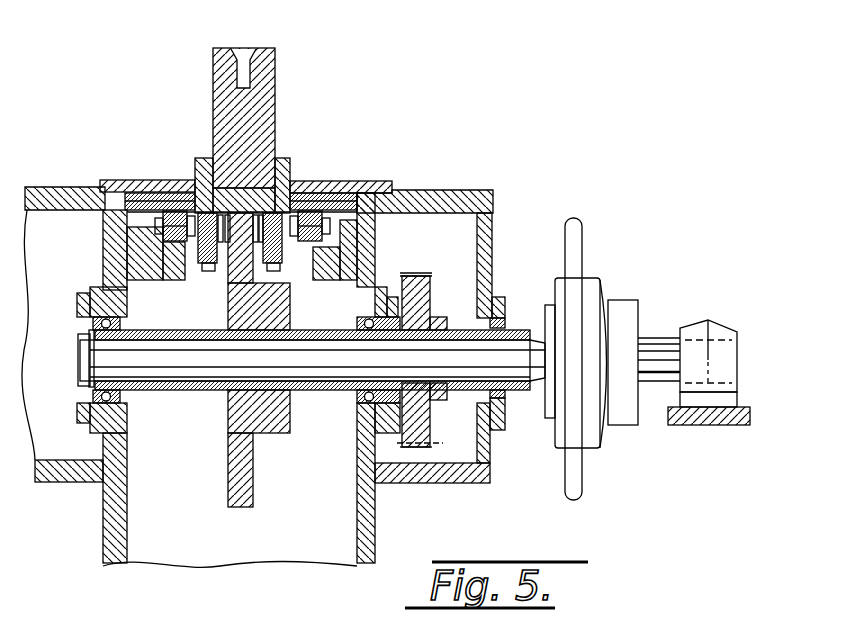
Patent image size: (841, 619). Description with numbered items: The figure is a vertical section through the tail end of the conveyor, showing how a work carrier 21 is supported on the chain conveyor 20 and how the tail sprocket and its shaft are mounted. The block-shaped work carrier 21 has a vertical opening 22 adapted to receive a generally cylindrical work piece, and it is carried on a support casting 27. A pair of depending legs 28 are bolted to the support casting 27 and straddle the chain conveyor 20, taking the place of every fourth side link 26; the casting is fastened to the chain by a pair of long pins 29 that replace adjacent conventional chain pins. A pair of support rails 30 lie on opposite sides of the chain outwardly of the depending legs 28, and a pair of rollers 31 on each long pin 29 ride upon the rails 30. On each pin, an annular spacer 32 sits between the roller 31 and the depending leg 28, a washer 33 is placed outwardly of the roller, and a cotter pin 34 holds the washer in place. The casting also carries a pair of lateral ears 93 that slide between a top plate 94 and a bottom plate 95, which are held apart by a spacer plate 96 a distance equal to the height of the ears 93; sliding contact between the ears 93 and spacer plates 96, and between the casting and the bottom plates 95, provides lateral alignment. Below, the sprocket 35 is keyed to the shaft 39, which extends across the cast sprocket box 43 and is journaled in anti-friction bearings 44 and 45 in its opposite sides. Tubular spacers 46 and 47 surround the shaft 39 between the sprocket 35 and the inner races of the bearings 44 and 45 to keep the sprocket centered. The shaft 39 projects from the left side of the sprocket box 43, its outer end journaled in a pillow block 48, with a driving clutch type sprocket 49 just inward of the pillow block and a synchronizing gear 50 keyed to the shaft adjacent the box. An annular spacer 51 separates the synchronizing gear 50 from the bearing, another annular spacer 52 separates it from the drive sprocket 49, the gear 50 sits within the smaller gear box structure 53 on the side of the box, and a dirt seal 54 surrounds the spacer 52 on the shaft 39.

The chain conveyor 20 is at (262, 207).
The work carrier 21 is at (277, 78).
The vertical opening 22 is at (244, 56).
The side link 26 is at (201, 161).
The support casting 27 is at (283, 160).
The depending leg 28 is at (208, 272).
The long pin 29 is at (380, 240).
The support rail 30 is at (178, 281).
The roller 31 is at (166, 275).
The annular spacer 32 is at (197, 195).
The washer 33 is at (165, 252).
The cotter pin 34 is at (150, 238).
The sprocket 35 is at (228, 497).
The shaft 39 is at (224, 392).
The sprocket box 43 is at (376, 490).
The anti-friction bearing 44 is at (360, 402).
The anti-friction bearing 45 is at (126, 403).
The tubular spacer 46 is at (300, 396).
The tubular spacer 47 is at (170, 393).
The pillow block 48 is at (712, 322).
The driving clutch type sprocket 49 is at (604, 292).
The synchronizing gear 50 is at (432, 276).
The annular spacer 51 is at (387, 339).
The annular spacer 52 is at (531, 393).
The gear box structure 53 is at (476, 192).
The dirt seal 54 is at (505, 325).
The lateral ear 93 is at (160, 188).
The top plate 94 is at (366, 188).
The bottom plate 95 is at (392, 204).
The spacer plate 96 is at (100, 195).